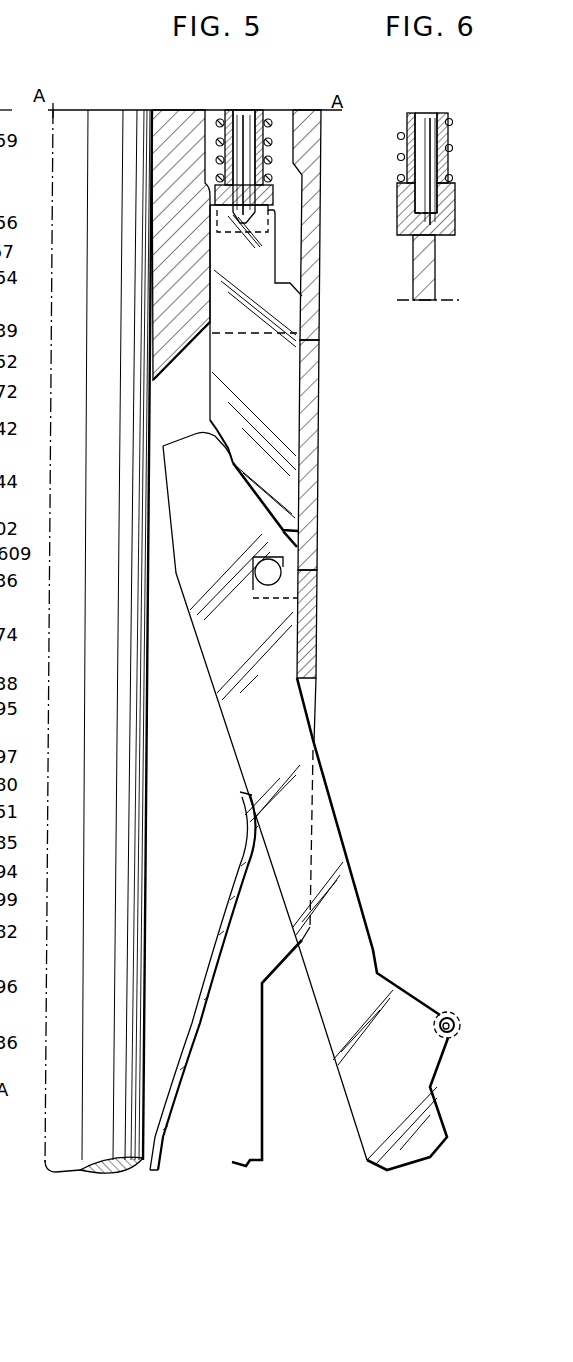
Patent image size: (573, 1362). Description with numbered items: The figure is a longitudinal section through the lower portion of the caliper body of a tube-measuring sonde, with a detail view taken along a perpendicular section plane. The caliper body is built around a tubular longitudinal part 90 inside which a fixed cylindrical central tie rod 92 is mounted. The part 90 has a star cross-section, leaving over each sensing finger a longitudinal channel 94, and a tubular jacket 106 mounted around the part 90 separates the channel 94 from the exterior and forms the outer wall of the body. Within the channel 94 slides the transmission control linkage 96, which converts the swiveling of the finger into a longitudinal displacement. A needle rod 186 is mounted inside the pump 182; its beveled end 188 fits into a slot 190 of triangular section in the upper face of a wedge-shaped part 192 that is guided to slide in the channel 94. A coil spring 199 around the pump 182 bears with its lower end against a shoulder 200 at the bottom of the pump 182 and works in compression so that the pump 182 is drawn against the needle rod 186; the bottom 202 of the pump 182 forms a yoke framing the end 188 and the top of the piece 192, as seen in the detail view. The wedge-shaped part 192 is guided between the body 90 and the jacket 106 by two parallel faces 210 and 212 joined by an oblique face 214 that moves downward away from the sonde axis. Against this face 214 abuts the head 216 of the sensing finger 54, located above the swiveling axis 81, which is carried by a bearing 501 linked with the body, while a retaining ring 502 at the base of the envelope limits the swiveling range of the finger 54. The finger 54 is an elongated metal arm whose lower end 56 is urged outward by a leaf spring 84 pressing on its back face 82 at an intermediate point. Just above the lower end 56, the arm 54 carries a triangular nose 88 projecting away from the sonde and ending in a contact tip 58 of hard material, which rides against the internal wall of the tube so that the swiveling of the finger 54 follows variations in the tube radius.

In FIG. 5, the central tie rod 92 is at (78, 134).
In FIG. 5, the tubular longitudinal part 90 is at (157, 278).
In FIG. 5, the pump 182 is at (262, 113).
In FIG. 6, the pump 182 is at (452, 122).
In FIG. 5, the needle rod 186 is at (250, 113).
In FIG. 6, the needle rod 186 is at (425, 125).
In FIG. 5, the coil spring 199 is at (217, 122).
In FIG. 6, the coil spring 199 is at (452, 150).
In FIG. 5, the shoulder 200 is at (210, 182).
In FIG. 6, the shoulder 200 is at (398, 178).
In FIG. 5, the end of the needle rod 188 is at (217, 222).
In FIG. 5, the slot 190 is at (207, 228).
In FIG. 6, the slot 190 is at (408, 213).
In FIG. 5, the transmission control linkage 96 is at (287, 233).
In FIG. 5, the longitudinal channel 94 is at (289, 182).
In FIG. 5, the wedge-shaped part 192 is at (270, 376).
In FIG. 6, the wedge-shaped part 192 is at (436, 283).
In FIG. 5, the parallel face 210 is at (210, 390).
In FIG. 5, the head of the sensing finger 216 is at (230, 450).
In FIG. 5, the parallel face 212 is at (298, 453).
In FIG. 5, the oblique face 214 is at (260, 488).
In FIG. 5, the bearing 501 is at (296, 548).
In FIG. 5, the swiveling axis 81 is at (270, 574).
In FIG. 5, the tubular jacket 106 is at (318, 394).
In FIG. 5, the retaining ring 502 is at (309, 638).
In FIG. 5, the back face of the finger 82 is at (228, 735).
In FIG. 5, the leaf spring 84 is at (217, 963).
In FIG. 5, the finger 54 is at (327, 842).
In FIG. 5, the triangular nose 88 is at (412, 1010).
In FIG. 5, the contact tip 58 is at (451, 1013).
In FIG. 5, the lower end of the arm 56 is at (400, 1143).
In FIG. 6, the bottom of the pump 202 is at (450, 215).